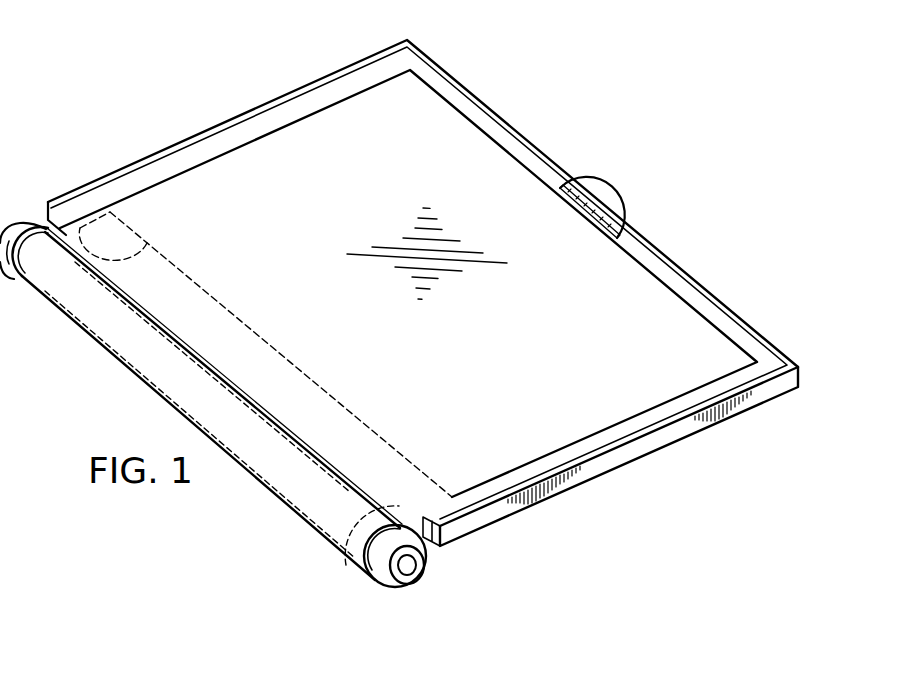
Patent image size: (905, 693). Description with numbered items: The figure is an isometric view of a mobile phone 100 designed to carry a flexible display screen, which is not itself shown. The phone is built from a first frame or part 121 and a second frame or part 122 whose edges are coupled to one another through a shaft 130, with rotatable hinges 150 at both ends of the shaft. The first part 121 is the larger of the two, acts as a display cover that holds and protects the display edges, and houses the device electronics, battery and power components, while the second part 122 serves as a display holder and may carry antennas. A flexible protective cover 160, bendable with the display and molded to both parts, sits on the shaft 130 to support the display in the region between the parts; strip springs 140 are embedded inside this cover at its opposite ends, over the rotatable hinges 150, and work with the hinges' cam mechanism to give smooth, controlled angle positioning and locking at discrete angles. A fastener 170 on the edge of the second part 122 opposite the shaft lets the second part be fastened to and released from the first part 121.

The mobile phone 100 is at (237, 65).
The first frame or part 121 is at (619, 471).
The second frame or part 122 is at (524, 350).
The shaft 130 is at (266, 419).
The strip springs 140 is at (146, 238).
The rotatable hinges 150 is at (411, 586).
The flexible protective cover 160 is at (683, 308).
The fastener 170 is at (612, 183).